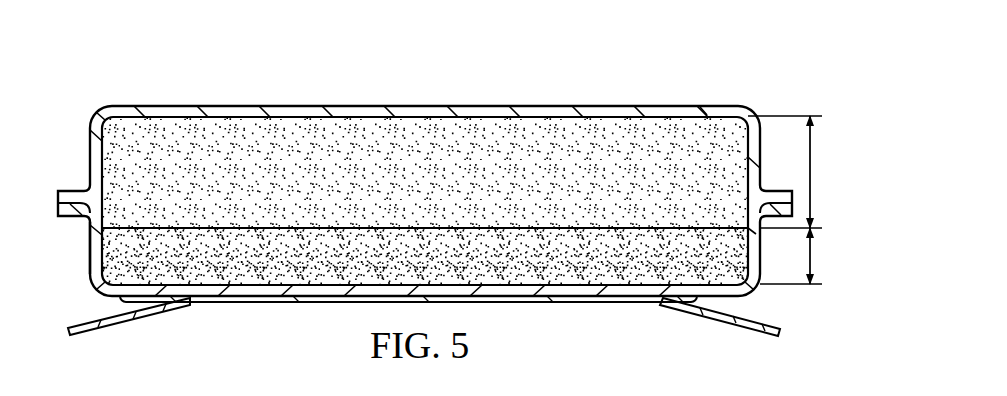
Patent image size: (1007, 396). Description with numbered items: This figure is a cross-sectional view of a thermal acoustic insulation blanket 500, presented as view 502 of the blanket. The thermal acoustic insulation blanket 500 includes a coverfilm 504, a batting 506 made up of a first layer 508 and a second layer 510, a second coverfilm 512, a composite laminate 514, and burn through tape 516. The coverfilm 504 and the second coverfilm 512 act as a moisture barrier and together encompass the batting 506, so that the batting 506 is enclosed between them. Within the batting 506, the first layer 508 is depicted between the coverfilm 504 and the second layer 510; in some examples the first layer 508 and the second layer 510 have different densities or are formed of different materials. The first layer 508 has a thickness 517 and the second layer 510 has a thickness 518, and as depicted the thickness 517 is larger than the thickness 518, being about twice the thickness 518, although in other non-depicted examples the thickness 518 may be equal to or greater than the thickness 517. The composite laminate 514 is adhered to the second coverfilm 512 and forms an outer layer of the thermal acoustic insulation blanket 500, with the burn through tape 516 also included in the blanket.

The thermal acoustic insulation blanket 500 is at (449, 195).
The view 502 is at (404, 154).
The coverfilm 504 is at (425, 112).
The batting 506 is at (98, 160).
The first layer 508 is at (447, 183).
The second layer 510 is at (447, 267).
The second coverfilm 512 is at (97, 249).
The composite laminate 514 is at (424, 336).
The burn through tape 516 is at (716, 318).
The thickness 517 is at (812, 170).
The thickness 518 is at (812, 258).